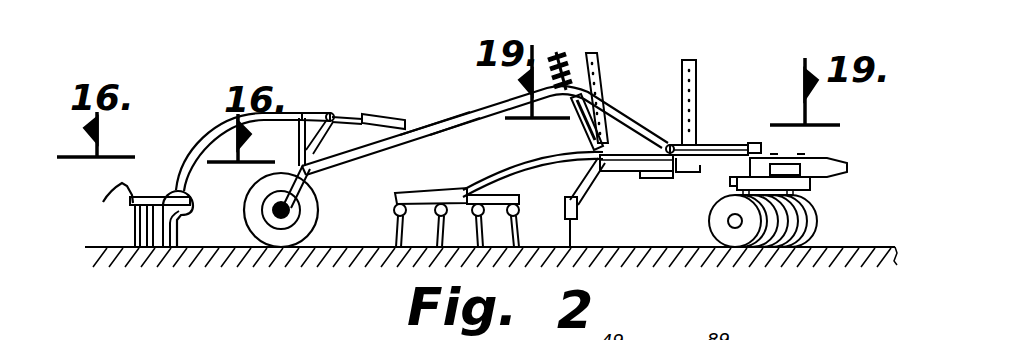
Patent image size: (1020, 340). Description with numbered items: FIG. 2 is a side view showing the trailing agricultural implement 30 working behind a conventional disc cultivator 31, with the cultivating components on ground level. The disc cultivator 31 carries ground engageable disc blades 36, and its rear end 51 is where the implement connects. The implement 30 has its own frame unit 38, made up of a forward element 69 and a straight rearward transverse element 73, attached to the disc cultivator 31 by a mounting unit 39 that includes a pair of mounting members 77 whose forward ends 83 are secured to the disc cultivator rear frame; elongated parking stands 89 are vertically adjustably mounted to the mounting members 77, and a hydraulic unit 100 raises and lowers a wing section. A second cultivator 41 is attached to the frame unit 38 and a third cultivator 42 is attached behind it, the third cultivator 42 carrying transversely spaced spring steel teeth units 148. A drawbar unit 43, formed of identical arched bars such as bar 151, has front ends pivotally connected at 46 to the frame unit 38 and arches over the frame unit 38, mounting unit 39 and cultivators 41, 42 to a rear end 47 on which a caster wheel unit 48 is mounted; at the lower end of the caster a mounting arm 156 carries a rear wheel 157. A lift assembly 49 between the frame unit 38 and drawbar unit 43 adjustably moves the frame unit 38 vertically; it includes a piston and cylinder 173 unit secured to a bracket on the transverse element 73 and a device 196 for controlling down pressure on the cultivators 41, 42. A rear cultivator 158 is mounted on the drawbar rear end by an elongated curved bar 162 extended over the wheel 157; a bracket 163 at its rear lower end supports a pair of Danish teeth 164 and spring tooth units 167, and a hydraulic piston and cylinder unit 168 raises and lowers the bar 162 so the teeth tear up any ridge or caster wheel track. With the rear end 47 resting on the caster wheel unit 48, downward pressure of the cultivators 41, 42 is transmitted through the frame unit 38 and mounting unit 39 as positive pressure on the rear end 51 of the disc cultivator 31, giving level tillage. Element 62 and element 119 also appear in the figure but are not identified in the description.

The agricultural implement 30 is at (403, 60).
The disc cultivator 31 is at (857, 138).
The disc blades 36 is at (813, 221).
The frame unit 38 is at (622, 192).
The mounting unit 39 is at (710, 110).
The second cultivator 41 is at (592, 196).
The third cultivator 42 is at (393, 226).
The draw bar unit 43 is at (470, 90).
The pivotal connection 46 is at (675, 143).
The rear end 47 is at (450, 116).
The caster wheel unit 48 is at (306, 100).
The lift assembly 49 is at (630, 53).
The rear end 51 is at (843, 176).
The roller ground contact 62 is at (778, 250).
The forward element 69 is at (672, 168).
The rearward transverse element 73 is at (620, 155).
The mounting members 77 is at (737, 143).
The forward ends 83 is at (751, 142).
The parking stands 89 is at (694, 66).
The hydraulic unit 100 is at (648, 182).
The spring coupling 119 is at (571, 52).
The spring steel teeth units 148 is at (124, 216).
The elongated bar 151 is at (433, 113).
The mounting arm 156 is at (318, 178).
The rear wheel 157 is at (282, 242).
The rear cultivator 158 is at (104, 202).
The curved bar 162 is at (216, 130).
The bracket 163 is at (151, 249).
The Danish teeth 164 is at (168, 186).
The spring tooth unit 167 is at (124, 236).
The hydraulic piston and cylinder unit 168 is at (380, 114).
The cylinder 173 is at (574, 134).
The device for controlling down pressure 196 is at (612, 76).